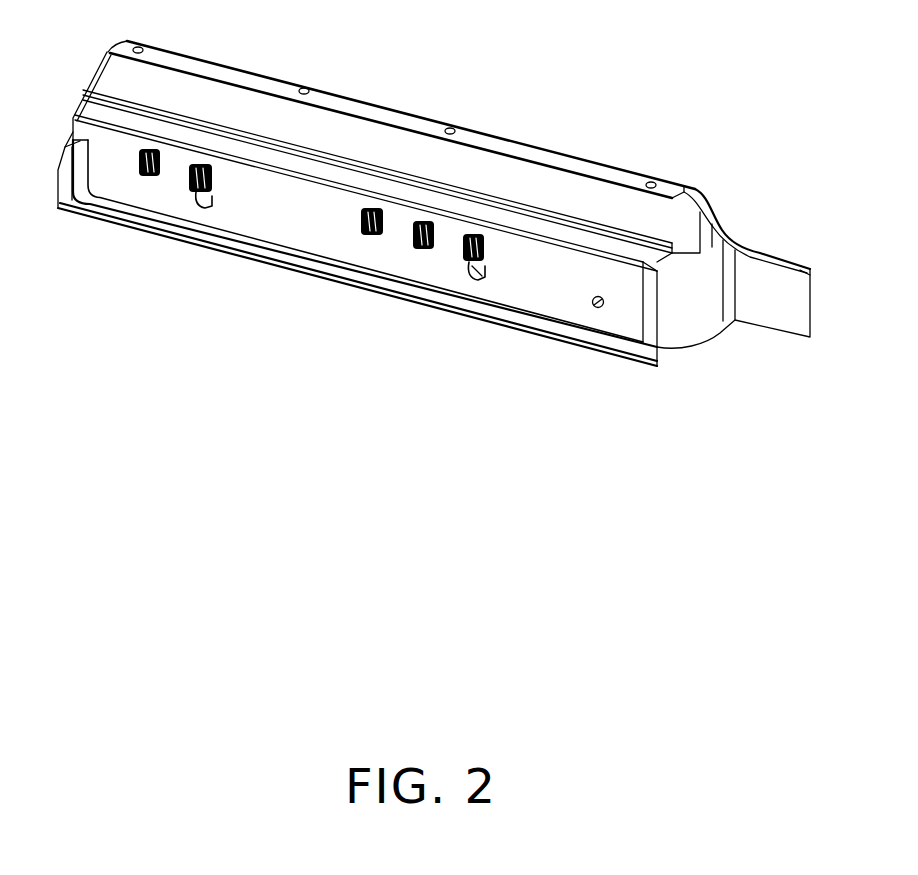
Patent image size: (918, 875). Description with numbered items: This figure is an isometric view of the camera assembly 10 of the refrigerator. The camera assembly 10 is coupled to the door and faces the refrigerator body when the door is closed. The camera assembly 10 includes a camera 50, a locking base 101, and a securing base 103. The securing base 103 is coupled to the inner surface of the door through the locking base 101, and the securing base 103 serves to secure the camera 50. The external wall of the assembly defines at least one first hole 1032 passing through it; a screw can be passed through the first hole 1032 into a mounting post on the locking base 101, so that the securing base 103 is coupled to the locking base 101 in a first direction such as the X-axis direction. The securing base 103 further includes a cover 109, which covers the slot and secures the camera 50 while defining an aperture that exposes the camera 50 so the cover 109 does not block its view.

The camera assembly 10 is at (435, 248).
The locking base 101 is at (399, 227).
The securing base 103 is at (742, 250).
The first hole 1032 is at (590, 306).
The cover 109 is at (490, 143).
The camera 50 is at (306, 88).